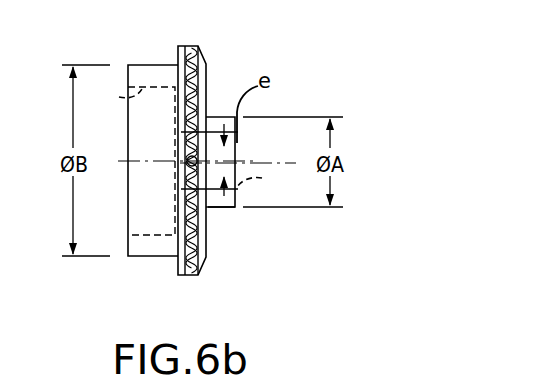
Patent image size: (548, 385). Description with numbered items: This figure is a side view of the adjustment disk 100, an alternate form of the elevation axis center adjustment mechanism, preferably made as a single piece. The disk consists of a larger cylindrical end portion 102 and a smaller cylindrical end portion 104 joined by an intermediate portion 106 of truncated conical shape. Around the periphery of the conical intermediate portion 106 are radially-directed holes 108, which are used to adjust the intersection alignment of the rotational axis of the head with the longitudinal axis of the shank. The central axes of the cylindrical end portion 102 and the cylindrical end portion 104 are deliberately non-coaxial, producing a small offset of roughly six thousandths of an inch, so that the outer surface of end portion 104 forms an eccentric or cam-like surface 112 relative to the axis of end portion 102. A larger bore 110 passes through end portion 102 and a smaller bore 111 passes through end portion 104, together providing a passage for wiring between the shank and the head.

The adjustment disk 100 is at (318, 286).
The cylindrical end portion 102 is at (156, 257).
The cylindrical end portion 104 is at (238, 145).
The intermediate portion 106 is at (191, 268).
The radially-directed holes 108 is at (184, 151).
The bore 110 is at (119, 97).
The bore 111 is at (262, 178).
The eccentric or cam-like surface 112 is at (218, 208).